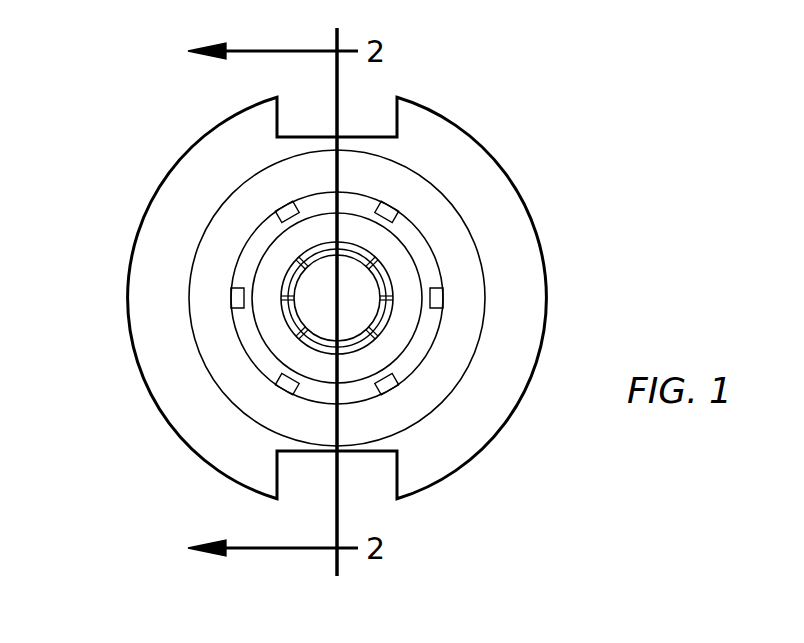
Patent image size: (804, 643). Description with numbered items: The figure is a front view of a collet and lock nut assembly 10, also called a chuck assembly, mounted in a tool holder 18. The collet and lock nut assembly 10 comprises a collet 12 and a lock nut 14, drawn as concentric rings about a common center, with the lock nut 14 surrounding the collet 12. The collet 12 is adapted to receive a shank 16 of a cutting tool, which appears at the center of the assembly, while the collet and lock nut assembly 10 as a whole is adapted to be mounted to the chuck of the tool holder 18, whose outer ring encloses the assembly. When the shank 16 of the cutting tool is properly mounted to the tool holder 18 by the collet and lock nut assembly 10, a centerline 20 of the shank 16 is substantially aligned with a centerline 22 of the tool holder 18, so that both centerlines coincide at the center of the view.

The collet and lock nut assembly 10 is at (228, 337).
The collet 12 is at (287, 337).
The lock nut 14 is at (267, 238).
The shank 16 is at (322, 312).
The tool holder 18 is at (487, 145).
The centerline of the shank 20 is at (327, 298).
The centerline of the tool holder 22 is at (327, 298).